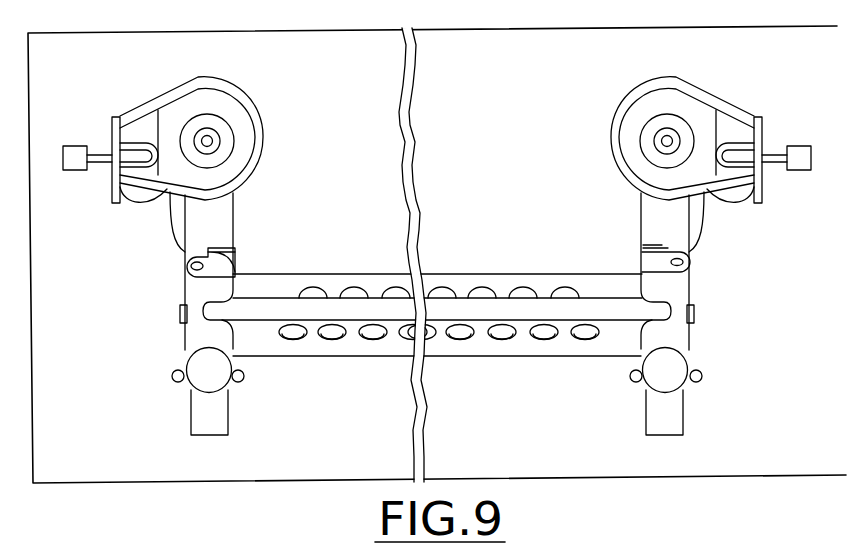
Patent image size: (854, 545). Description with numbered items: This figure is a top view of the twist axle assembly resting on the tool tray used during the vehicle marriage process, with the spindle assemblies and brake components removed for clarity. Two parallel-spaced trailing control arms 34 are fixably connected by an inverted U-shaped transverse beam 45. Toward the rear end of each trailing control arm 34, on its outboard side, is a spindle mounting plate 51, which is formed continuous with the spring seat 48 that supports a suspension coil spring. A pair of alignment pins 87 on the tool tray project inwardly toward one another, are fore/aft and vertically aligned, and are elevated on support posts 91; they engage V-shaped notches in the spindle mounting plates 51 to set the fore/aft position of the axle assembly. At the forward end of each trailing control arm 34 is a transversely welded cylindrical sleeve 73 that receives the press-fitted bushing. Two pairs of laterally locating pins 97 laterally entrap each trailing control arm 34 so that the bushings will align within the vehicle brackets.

The spring seat 48 is at (241, 124).
The spindle mounting plate 51 is at (111, 119).
The alignment pin 87 is at (103, 168).
The support post 91 is at (75, 172).
The cylindrical sleeve 73 is at (198, 415).
The trailing control arm 34 is at (187, 334).
The laterally locating pin 97 is at (172, 375).
The transverse beam 45 is at (522, 352).